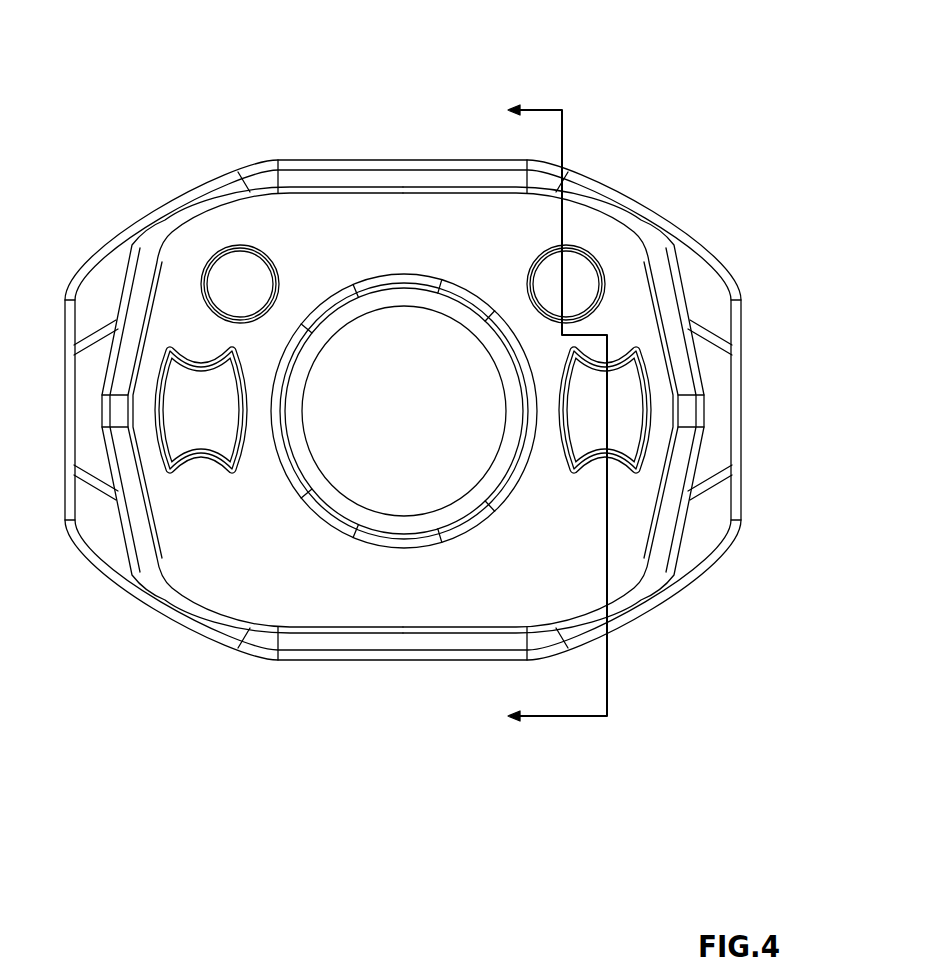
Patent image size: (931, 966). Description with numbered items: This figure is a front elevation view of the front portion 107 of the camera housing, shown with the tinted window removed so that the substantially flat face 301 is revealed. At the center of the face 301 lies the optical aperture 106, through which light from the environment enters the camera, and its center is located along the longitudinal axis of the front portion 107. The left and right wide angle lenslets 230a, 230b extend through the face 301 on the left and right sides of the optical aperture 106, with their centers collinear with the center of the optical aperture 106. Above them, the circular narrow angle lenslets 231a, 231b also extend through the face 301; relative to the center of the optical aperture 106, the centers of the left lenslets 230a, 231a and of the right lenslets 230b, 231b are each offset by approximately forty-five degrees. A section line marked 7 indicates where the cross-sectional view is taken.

The front portion 107 is at (323, 58).
The section line 7- 7 is at (548, 413).
The left narrow angle lenslet 231a is at (237, 274).
The right narrow angle lenslet 231b is at (580, 292).
The left wide angle lenslet 230a is at (232, 421).
The right wide angle lenslet 230b is at (623, 413).
The optical aperture 106 is at (425, 427).
The face 301 is at (425, 591).